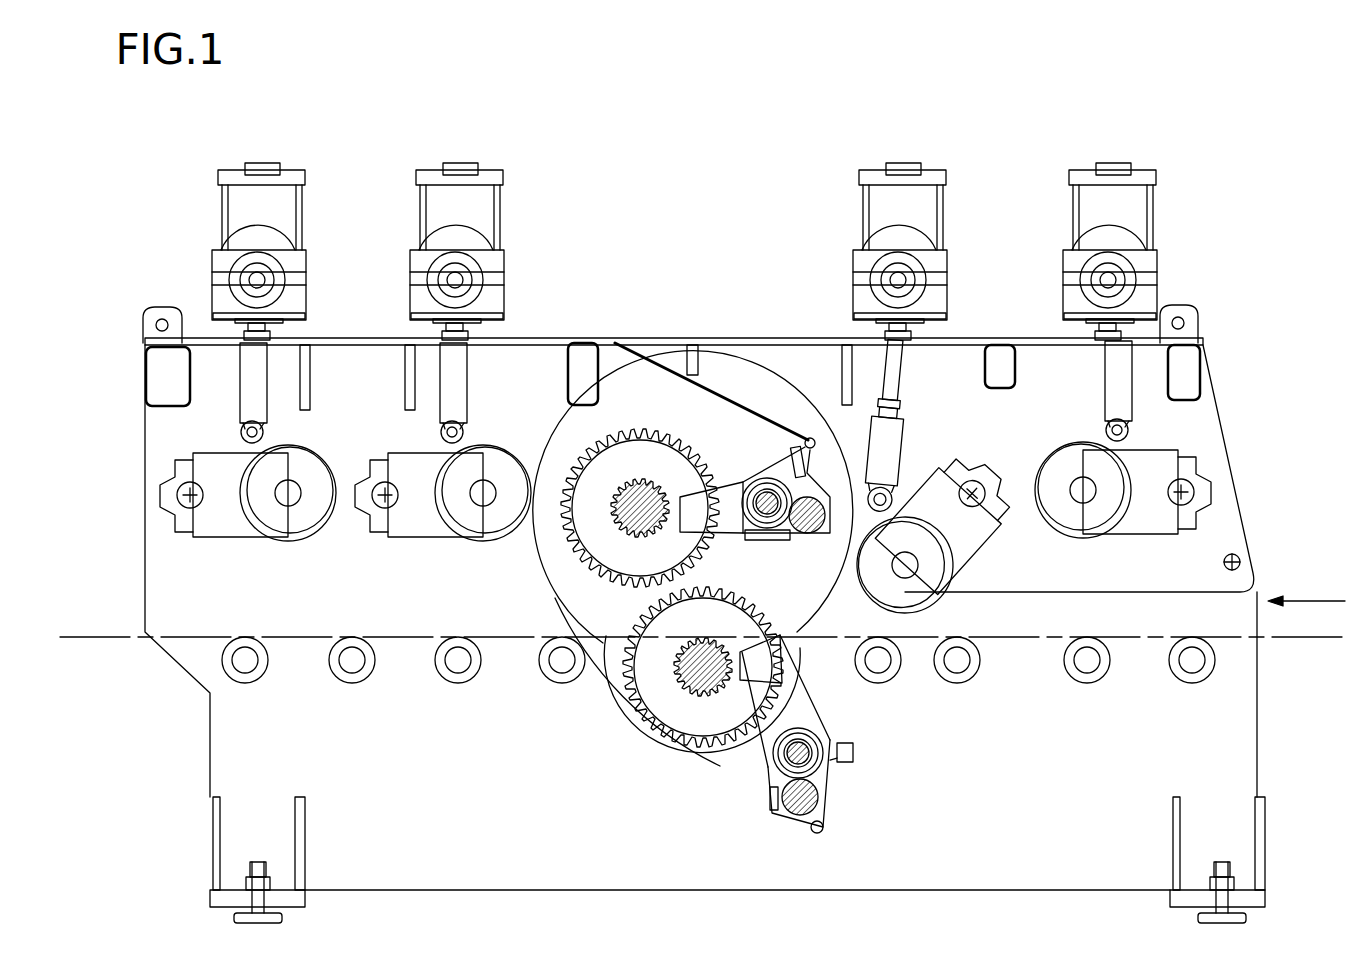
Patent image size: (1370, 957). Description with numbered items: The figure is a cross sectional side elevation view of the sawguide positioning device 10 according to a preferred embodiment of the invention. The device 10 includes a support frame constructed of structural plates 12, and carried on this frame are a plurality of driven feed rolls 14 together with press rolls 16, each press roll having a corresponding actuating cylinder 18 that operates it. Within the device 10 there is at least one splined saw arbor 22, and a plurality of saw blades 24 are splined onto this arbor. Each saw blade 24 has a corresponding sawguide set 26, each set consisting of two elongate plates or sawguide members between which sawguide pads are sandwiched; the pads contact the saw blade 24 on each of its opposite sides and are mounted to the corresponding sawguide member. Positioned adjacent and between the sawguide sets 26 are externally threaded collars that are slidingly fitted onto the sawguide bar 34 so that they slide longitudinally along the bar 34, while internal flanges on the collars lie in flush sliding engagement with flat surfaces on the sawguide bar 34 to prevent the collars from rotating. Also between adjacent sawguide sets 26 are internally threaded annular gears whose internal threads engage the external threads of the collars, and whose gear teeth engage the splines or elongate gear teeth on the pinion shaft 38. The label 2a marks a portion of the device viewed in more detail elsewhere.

The sawguide positioning device 10 is at (638, 220).
The structural plates 12 is at (168, 598).
The driven feed rolls 14 is at (340, 680).
The press rolls 16 is at (300, 447).
The actuating cylinders 18 is at (472, 215).
The web path 2a is at (766, 365).
The splined saw arbor 22 is at (637, 480).
The saw blades 24 is at (587, 532).
The sawguide set 26 is at (700, 502).
The sawguide bar 34 is at (762, 520).
The pinion shaft 38 is at (807, 530).